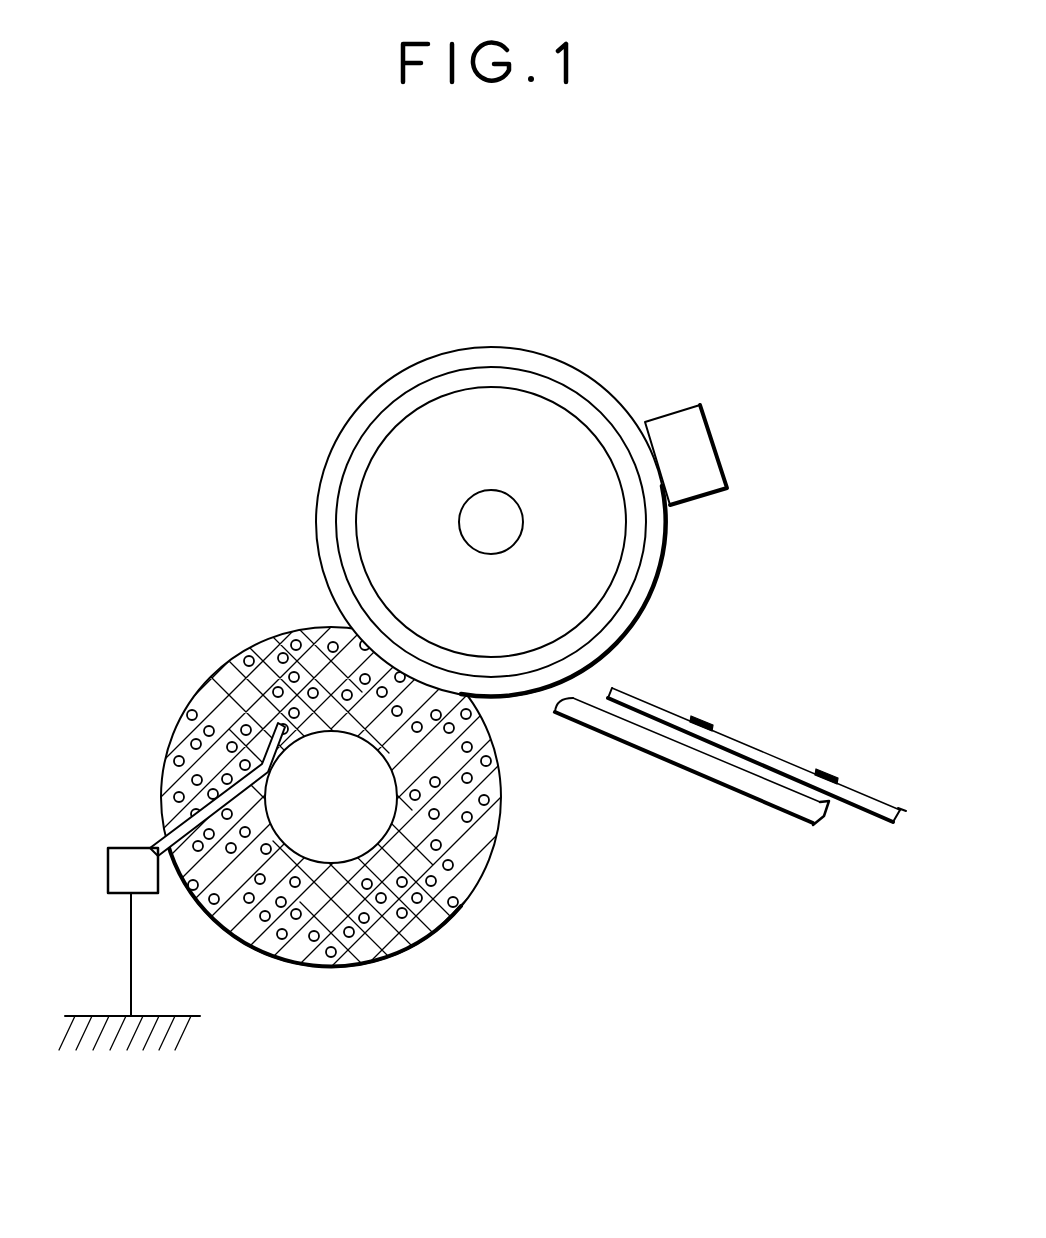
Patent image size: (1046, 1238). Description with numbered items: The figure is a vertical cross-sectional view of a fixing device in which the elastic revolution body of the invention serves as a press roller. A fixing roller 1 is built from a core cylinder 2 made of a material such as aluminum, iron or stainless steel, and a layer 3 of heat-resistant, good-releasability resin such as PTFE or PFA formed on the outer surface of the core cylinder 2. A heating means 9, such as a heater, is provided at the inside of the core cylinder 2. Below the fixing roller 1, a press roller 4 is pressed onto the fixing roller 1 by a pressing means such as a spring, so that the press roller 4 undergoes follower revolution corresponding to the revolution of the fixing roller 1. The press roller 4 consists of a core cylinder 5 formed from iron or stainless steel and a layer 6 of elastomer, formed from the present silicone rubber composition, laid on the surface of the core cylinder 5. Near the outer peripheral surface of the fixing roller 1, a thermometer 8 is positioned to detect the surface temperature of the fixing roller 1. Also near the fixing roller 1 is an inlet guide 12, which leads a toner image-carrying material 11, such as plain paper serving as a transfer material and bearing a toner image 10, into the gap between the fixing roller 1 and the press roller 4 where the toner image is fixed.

The fixing roller 1 is at (388, 255).
The core cylinder 2 is at (353, 475).
The layer of resin 3 is at (322, 528).
The press roller 4 is at (555, 842).
The core cylinder 5 is at (348, 845).
The layer of elastomer 6 is at (473, 872).
The thermometer 8 is at (703, 453).
The heating means 9 is at (480, 510).
The toner image 10 is at (703, 716).
The toner image-carrying material 11 is at (790, 767).
The inlet guide 12 is at (790, 808).